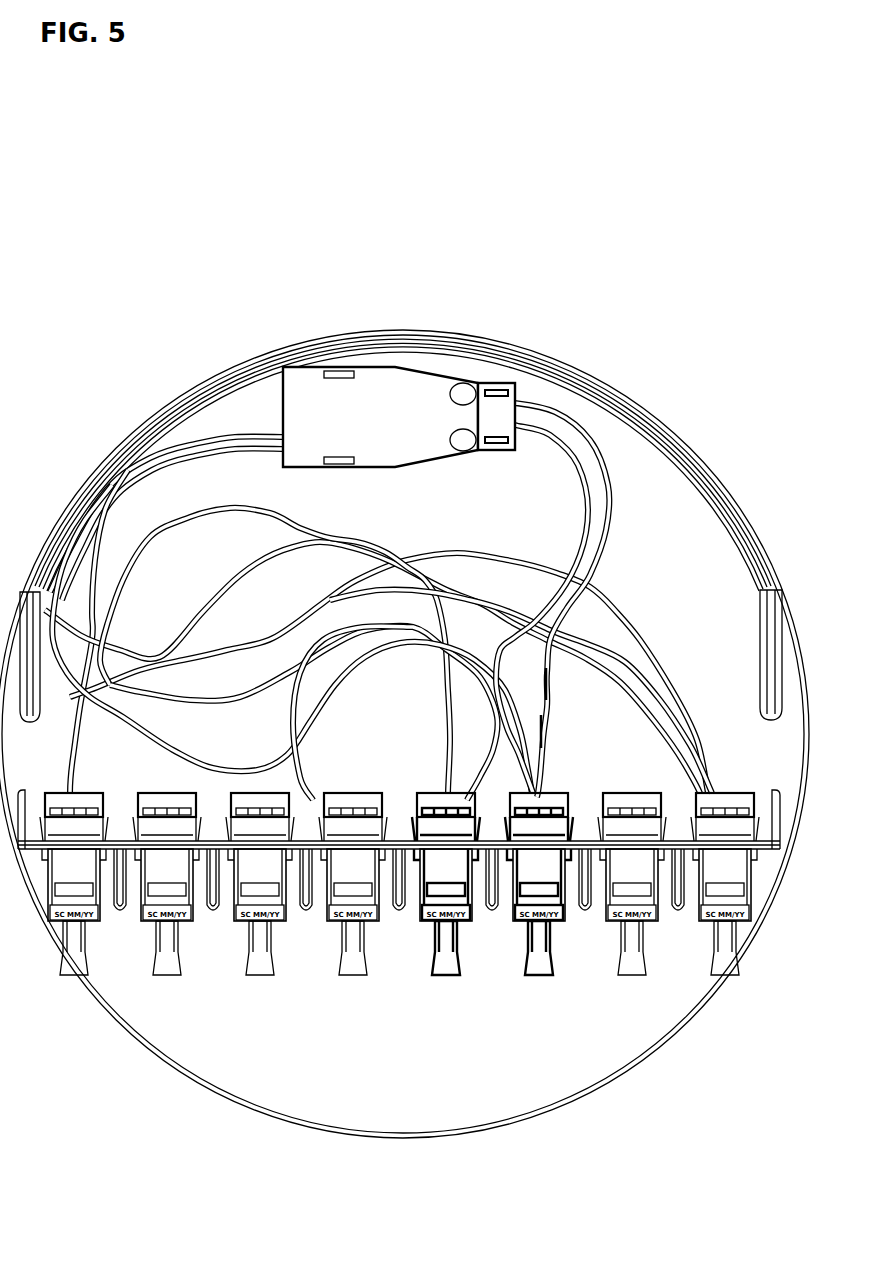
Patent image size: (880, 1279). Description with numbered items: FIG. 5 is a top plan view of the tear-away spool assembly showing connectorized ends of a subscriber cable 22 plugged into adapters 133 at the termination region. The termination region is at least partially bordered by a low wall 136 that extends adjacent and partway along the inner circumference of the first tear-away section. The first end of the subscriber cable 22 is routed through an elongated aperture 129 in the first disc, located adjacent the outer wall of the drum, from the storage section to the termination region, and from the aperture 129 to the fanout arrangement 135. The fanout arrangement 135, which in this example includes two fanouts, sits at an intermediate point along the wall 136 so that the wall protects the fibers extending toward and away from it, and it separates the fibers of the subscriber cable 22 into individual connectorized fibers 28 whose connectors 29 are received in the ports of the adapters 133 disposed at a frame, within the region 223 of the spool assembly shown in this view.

The subscriber cable 22 is at (603, 512).
The optical fiber 28 is at (243, 448).
The fiber optic adapter 29 is at (62, 795).
The aperture 129 is at (537, 760).
The adapters 133 is at (183, 918).
The fanout arrangement 135 is at (380, 378).
The wall 136 is at (535, 350).
The tray 223 is at (401, 656).